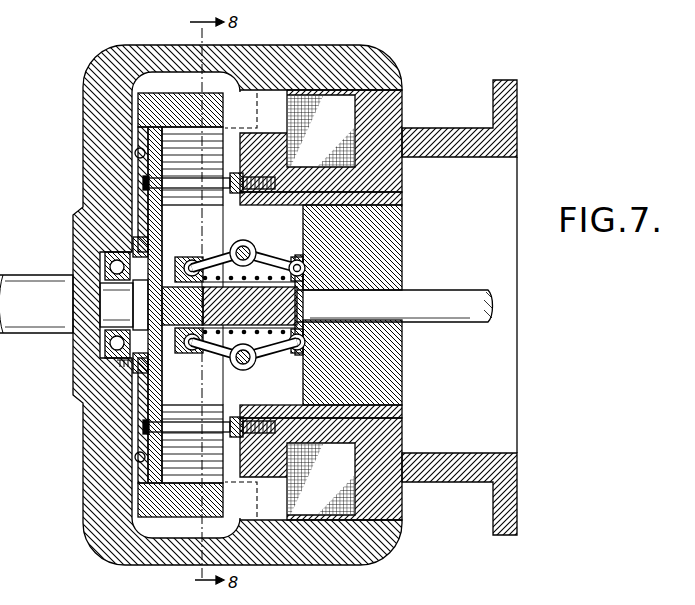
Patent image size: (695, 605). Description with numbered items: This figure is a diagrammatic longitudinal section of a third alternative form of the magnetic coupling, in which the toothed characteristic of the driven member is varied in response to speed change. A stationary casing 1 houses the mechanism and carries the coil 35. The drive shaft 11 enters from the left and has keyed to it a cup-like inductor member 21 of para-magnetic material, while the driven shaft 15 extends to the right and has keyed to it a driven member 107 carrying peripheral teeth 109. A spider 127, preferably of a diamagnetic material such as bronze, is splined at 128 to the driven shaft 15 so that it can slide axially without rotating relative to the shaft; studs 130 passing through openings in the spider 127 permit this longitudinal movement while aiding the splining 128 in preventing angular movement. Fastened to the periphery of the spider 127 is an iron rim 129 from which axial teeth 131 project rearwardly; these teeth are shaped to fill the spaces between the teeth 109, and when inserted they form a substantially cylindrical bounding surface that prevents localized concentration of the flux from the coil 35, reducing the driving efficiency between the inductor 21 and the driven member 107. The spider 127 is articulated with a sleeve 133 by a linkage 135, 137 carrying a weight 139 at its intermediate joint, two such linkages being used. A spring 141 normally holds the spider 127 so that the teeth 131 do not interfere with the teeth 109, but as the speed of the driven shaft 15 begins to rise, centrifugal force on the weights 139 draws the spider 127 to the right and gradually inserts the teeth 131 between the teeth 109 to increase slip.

The stationary casing 1 is at (433, 128).
The drive shaft 11 is at (42, 280).
The driven shaft 15 is at (434, 302).
The inductor member 21 is at (376, 47).
The coil 35 is at (321, 305).
The driven member 107 is at (382, 240).
The peripheral teeth 109 is at (262, 115).
The spider 127 is at (140, 388).
The splining 128 is at (147, 262).
The rim 129 is at (142, 120).
The studs 130 is at (144, 183).
The axial teeth 131 is at (186, 135).
The sleeve 133 is at (297, 258).
The linkage 135 is at (210, 260).
The linkage 137 is at (274, 258).
The weight 139 is at (242, 246).
The spring 141 is at (268, 340).